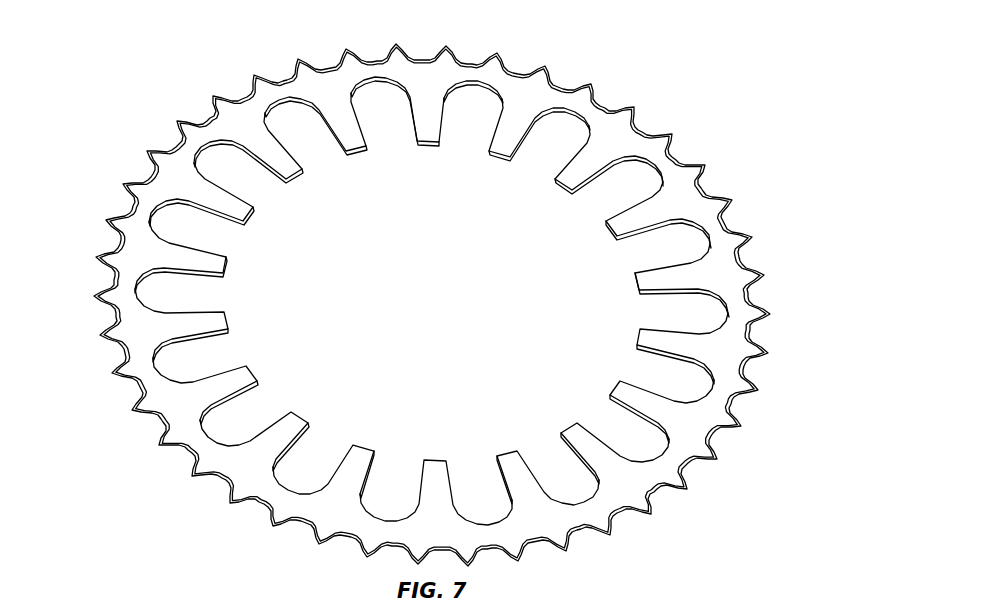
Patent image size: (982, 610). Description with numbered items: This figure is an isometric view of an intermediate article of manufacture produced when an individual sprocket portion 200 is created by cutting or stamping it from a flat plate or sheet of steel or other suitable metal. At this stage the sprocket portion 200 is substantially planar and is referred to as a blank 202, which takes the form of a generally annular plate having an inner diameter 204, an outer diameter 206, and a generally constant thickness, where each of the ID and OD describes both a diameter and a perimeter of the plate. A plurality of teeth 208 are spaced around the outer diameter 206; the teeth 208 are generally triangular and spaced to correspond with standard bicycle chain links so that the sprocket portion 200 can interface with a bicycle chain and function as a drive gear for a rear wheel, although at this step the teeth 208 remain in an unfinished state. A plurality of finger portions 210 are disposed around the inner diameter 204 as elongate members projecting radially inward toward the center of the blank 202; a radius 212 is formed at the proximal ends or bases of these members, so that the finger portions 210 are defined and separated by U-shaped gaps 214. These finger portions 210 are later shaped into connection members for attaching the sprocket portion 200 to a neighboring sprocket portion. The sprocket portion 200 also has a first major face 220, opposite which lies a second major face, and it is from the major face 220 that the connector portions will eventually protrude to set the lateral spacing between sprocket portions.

The sprocket portion 200 is at (122, 62).
The blank 202 is at (107, 140).
The inner diameter 204 is at (322, 198).
The outer diameter 206 is at (723, 140).
The teeth 208 is at (767, 317).
The finger portions 210 is at (625, 281).
The radius 212 is at (712, 320).
The U-shaped gaps 214 is at (531, 430).
The first major face 220 is at (638, 483).